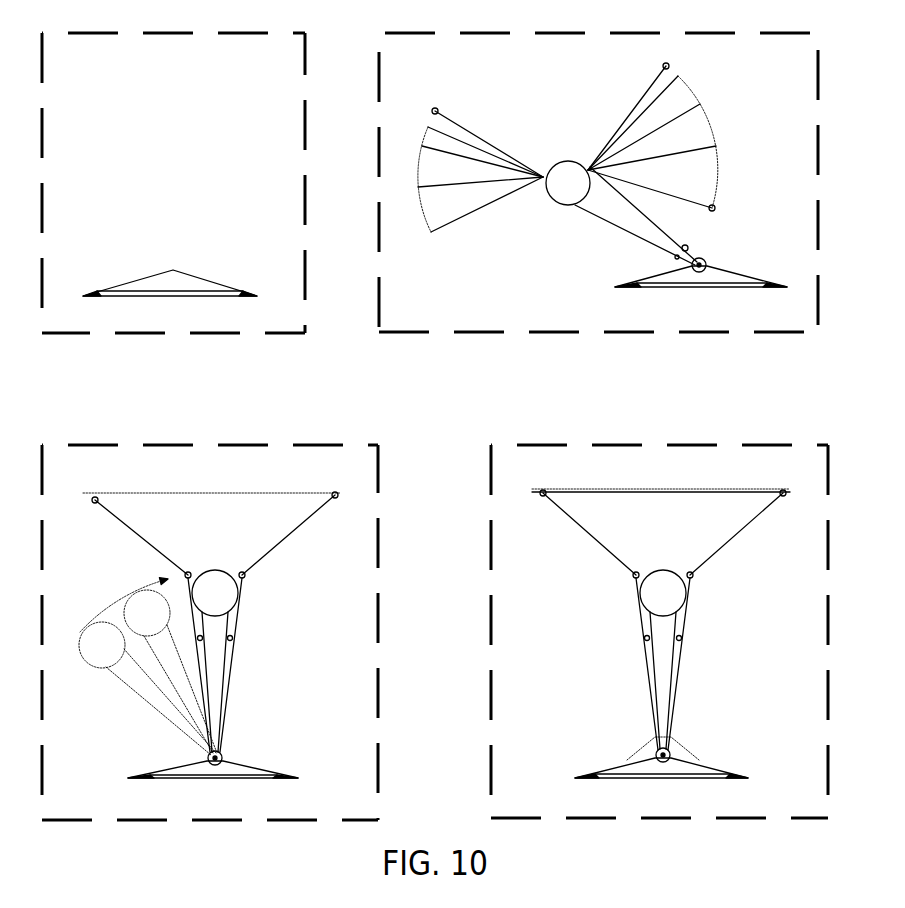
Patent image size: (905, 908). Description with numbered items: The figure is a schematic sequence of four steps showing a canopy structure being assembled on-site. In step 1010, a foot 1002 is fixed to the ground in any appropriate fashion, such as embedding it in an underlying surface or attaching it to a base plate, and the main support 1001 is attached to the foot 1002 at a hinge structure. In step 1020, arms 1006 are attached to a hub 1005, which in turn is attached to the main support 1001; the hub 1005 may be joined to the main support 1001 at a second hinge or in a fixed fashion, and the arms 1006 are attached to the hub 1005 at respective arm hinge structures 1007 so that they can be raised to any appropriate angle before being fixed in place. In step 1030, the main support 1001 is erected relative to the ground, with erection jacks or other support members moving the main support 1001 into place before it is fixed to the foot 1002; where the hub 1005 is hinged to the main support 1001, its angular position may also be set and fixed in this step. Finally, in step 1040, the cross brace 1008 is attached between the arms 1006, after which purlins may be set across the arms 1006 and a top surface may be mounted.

The main support 1001 is at (642, 240).
The foot 1002 is at (173, 270).
The hub 1005 is at (575, 162).
The arms 1006 is at (668, 193).
The arm hinge structures 1007 is at (546, 170).
The cross brace 1008 is at (658, 492).
The step 1010 is at (173, 183).
The step 1020 is at (598, 182).
The step 1030 is at (367, 813).
The step 1040 is at (659, 600).